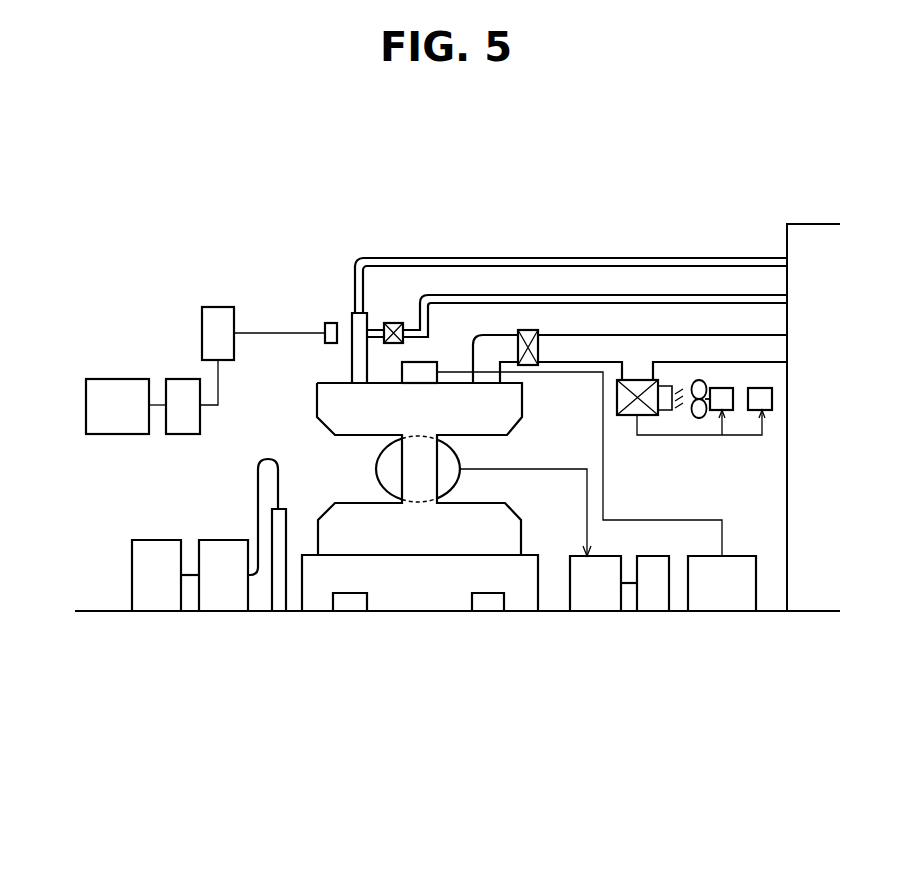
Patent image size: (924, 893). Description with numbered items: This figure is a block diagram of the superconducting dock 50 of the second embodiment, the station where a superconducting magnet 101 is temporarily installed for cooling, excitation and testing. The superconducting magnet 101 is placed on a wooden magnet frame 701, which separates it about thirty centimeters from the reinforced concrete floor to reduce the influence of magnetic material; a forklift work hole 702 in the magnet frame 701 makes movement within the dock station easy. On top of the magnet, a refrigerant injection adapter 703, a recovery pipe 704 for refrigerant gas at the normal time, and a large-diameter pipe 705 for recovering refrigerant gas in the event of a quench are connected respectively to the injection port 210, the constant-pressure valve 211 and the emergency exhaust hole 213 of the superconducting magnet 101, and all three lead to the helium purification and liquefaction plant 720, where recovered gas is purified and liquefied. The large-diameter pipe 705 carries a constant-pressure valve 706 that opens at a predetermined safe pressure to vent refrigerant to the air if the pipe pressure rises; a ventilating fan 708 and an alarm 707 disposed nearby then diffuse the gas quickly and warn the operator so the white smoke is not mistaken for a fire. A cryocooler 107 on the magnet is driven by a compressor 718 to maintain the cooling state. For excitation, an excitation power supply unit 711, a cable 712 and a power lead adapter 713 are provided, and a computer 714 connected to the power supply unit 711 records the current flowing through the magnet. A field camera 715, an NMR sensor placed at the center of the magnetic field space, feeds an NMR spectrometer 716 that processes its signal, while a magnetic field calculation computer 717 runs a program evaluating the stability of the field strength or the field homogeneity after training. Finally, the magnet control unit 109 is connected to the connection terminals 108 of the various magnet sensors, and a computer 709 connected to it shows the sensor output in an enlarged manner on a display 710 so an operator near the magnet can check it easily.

The superconducting dock 50 is at (754, 148).
The superconducting magnet 101 is at (435, 415).
The cryocooler 107 is at (432, 362).
The connection terminals 108 is at (330, 322).
The magnet control unit 109 is at (218, 307).
The injection port 210 is at (351, 318).
The constant-pressure valve 211 is at (393, 322).
The emergency exhaust hole 213 is at (532, 330).
The wooden magnet frame 701 is at (416, 612).
The forklift work hole 702 is at (350, 612).
The refrigerant injection adapter 703 is at (490, 257).
The recovery pipe 704 is at (516, 295).
The large-diameter pipe 705 is at (604, 335).
The constant-pressure valve 706 is at (630, 416).
The alarm 707 is at (758, 412).
The ventilating fan 708 is at (713, 413).
The computer 709 is at (183, 379).
The display 710 is at (120, 379).
The excitation power supply unit 711 is at (225, 540).
The cable 712 is at (270, 459).
The power lead adapter 713 is at (288, 525).
The computer 714 is at (160, 540).
The field camera 715 is at (463, 458).
The NMR spectrometer 716 is at (587, 612).
The magnetic field calculation computer 717 is at (652, 612).
The compressor 718 is at (712, 612).
The helium purification and liquefaction plant 720 is at (812, 224).